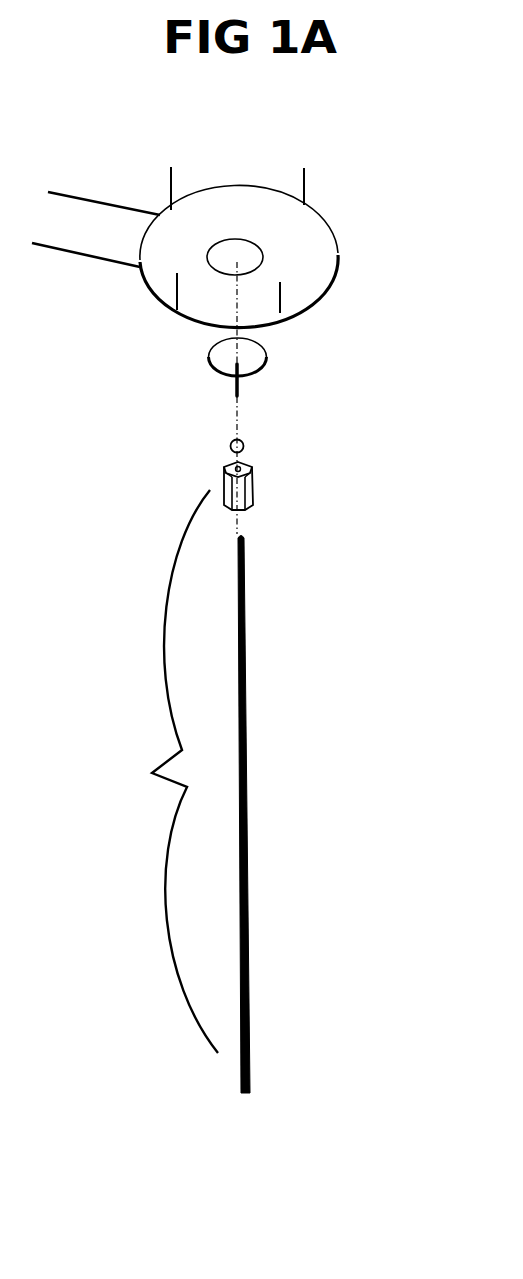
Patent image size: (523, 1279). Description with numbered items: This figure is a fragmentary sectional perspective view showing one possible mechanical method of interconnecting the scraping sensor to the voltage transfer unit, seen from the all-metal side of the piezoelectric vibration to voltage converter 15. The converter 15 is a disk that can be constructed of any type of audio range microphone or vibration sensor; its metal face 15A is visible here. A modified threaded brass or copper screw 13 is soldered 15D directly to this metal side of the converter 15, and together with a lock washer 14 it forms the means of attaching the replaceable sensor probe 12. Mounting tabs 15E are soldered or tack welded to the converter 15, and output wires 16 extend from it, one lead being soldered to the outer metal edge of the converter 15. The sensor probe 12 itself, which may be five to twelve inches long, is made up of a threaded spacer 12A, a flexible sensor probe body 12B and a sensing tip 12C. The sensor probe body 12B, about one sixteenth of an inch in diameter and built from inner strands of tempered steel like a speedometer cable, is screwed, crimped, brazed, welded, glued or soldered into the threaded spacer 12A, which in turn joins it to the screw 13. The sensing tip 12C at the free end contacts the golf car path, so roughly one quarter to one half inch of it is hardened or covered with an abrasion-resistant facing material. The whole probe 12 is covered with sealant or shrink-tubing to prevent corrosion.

The sensor probe 12 is at (166, 771).
The threaded spacer 12A is at (253, 480).
The sensor probe body 12B is at (247, 805).
The sensing tip 12C is at (243, 1090).
The threaded brass or copper screw 13 is at (267, 353).
The lock washer 14 is at (247, 443).
The piezoelectric vibration to voltage converter 15 is at (223, 183).
The disc top surface 15A is at (313, 237).
The solder joint 15D is at (237, 238).
The mounting tabs 15E is at (307, 205).
The output wires 16 is at (58, 198).